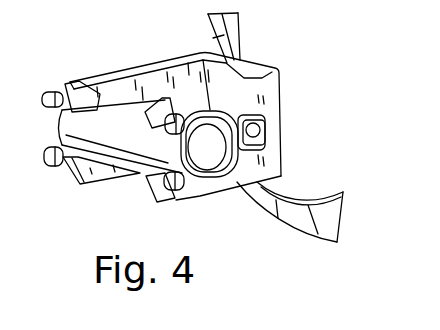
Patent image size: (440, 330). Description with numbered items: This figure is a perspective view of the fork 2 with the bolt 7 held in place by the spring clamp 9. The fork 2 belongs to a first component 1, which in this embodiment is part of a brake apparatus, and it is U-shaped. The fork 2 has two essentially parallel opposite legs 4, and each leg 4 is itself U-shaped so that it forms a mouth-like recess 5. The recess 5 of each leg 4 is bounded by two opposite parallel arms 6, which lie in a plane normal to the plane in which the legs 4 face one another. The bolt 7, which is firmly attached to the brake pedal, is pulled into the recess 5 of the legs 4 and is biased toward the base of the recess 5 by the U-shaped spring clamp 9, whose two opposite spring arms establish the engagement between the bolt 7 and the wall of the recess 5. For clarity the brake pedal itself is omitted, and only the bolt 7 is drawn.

The first component 1 is at (311, 158).
The fork 2 is at (232, 73).
The legs 4 is at (115, 92).
The recess 5 is at (152, 177).
The arms 6 is at (84, 94).
The bolt 7 is at (123, 135).
The U-shaped spring clamp 9 is at (235, 107).